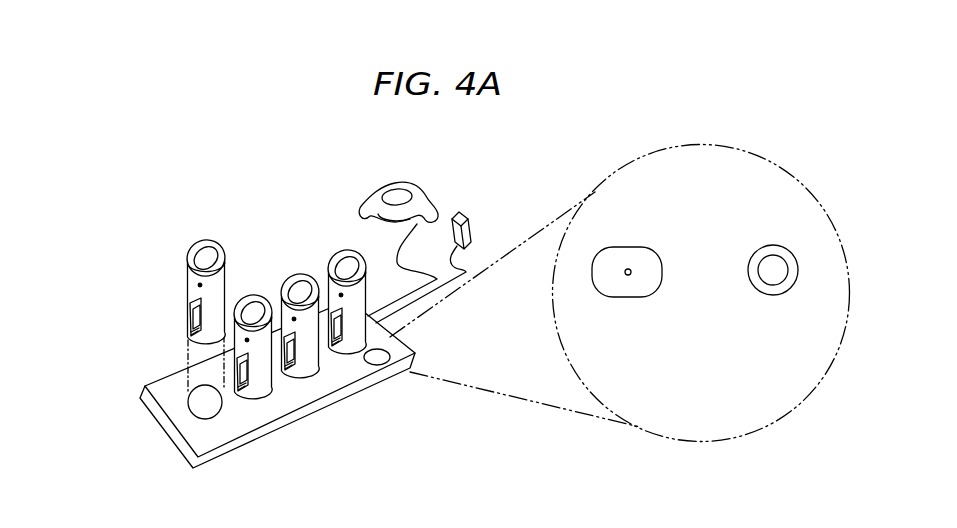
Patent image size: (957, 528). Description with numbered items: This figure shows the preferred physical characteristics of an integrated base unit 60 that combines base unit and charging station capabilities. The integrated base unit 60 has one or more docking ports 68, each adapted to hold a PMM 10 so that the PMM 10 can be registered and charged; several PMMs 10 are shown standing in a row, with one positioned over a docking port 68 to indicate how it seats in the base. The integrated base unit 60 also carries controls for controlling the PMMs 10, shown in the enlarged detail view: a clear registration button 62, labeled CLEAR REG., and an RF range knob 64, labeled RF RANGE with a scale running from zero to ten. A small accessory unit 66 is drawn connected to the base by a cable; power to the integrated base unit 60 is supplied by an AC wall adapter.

The PMM 10 is at (188, 297).
The integrated base unit 60 is at (155, 442).
The clear registration button 62 is at (630, 247).
The RF range knob 64 is at (760, 258).
The USB dongle 66 is at (470, 232).
The docking port 68 is at (206, 401).